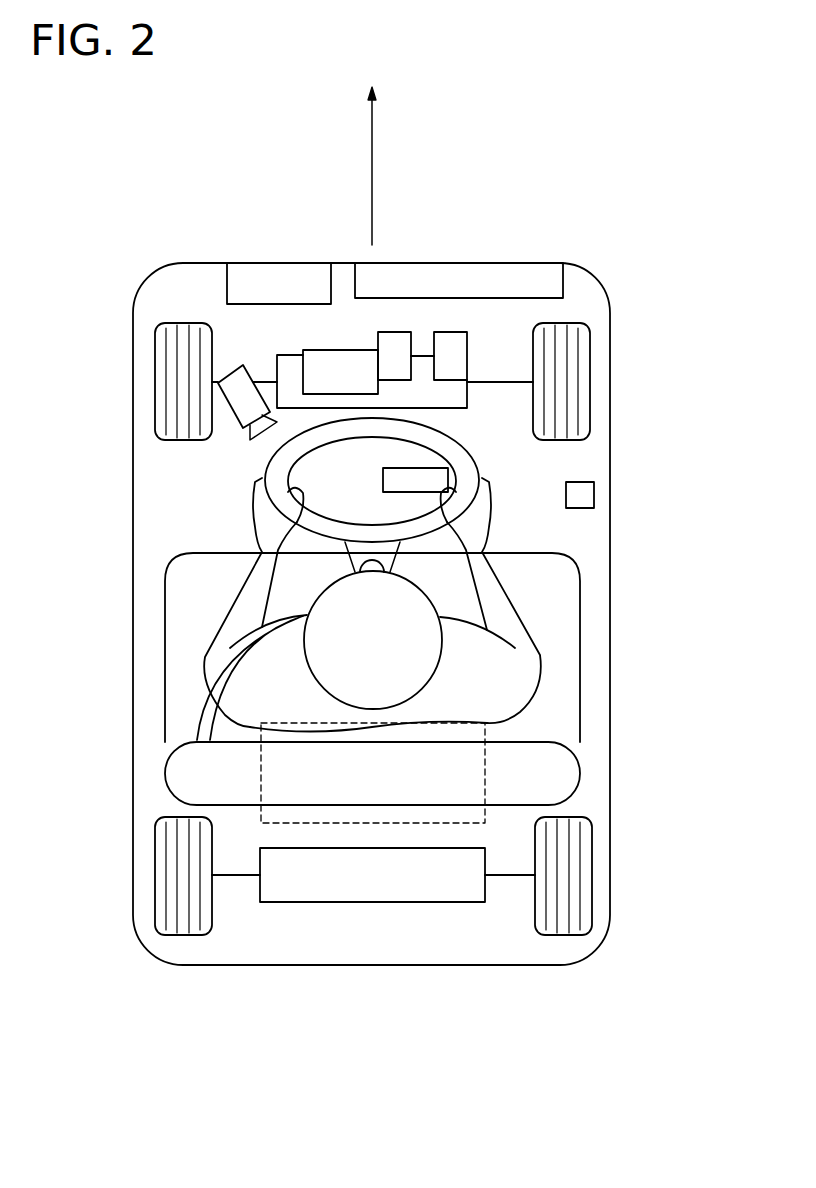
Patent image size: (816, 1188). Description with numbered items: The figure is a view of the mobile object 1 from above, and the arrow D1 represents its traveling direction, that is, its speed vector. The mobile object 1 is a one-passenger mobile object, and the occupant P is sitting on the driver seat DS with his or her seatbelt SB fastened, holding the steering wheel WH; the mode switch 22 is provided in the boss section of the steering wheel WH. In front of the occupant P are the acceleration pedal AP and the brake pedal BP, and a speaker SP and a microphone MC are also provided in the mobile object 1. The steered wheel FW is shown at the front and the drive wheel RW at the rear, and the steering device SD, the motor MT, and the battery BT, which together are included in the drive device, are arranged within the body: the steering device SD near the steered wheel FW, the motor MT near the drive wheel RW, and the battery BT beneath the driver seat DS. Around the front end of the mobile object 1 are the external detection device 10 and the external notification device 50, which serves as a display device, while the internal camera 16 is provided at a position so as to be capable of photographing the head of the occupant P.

The mobile object 1 is at (612, 612).
The external detection device 10 is at (275, 263).
The internal camera 16 is at (228, 370).
The mode switch 22 is at (430, 467).
The external notification device 50 is at (563, 279).
The traveling direction D1 is at (388, 166).
The brake pedal BP is at (393, 332).
The acceleration pedal AP is at (450, 332).
The steering device SD is at (468, 397).
The speaker SP is at (350, 349).
The steered wheel FW is at (592, 380).
The drive wheel RW is at (592, 875).
The steering wheel WH is at (273, 457).
The microphone MC is at (594, 493).
The driver seat DS is at (165, 650).
The occupant P is at (540, 678).
The seatbelt SB is at (200, 718).
The battery BT is at (487, 777).
The motor MT is at (370, 902).